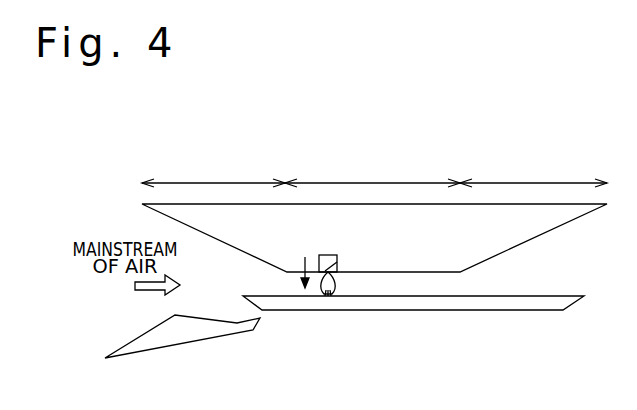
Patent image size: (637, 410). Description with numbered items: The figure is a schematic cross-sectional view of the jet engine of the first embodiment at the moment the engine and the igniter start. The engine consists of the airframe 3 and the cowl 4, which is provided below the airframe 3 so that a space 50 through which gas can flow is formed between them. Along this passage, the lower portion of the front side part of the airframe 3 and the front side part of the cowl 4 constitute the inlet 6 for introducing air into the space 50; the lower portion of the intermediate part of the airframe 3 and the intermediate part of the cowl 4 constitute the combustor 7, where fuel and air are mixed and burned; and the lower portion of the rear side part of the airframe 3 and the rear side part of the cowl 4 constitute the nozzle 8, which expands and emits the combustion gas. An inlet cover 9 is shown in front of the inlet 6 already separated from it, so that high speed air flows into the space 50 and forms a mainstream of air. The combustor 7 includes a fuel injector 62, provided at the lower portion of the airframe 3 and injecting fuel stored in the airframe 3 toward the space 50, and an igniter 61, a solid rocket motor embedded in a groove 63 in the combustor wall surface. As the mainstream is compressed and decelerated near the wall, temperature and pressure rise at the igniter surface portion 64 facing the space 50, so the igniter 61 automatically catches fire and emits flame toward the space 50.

The airframe 3 is at (497, 245).
The cowl 4 is at (507, 302).
The inlet 6 is at (213, 171).
The combustor 7 is at (372, 171).
The nozzle 8 is at (533, 172).
The inlet cover 9 is at (190, 338).
The space 50 is at (351, 285).
The igniter 61 is at (327, 255).
The fuel injector 62 is at (304, 262).
The groove 63 is at (337, 262).
The igniter surface portion 64 is at (334, 278).